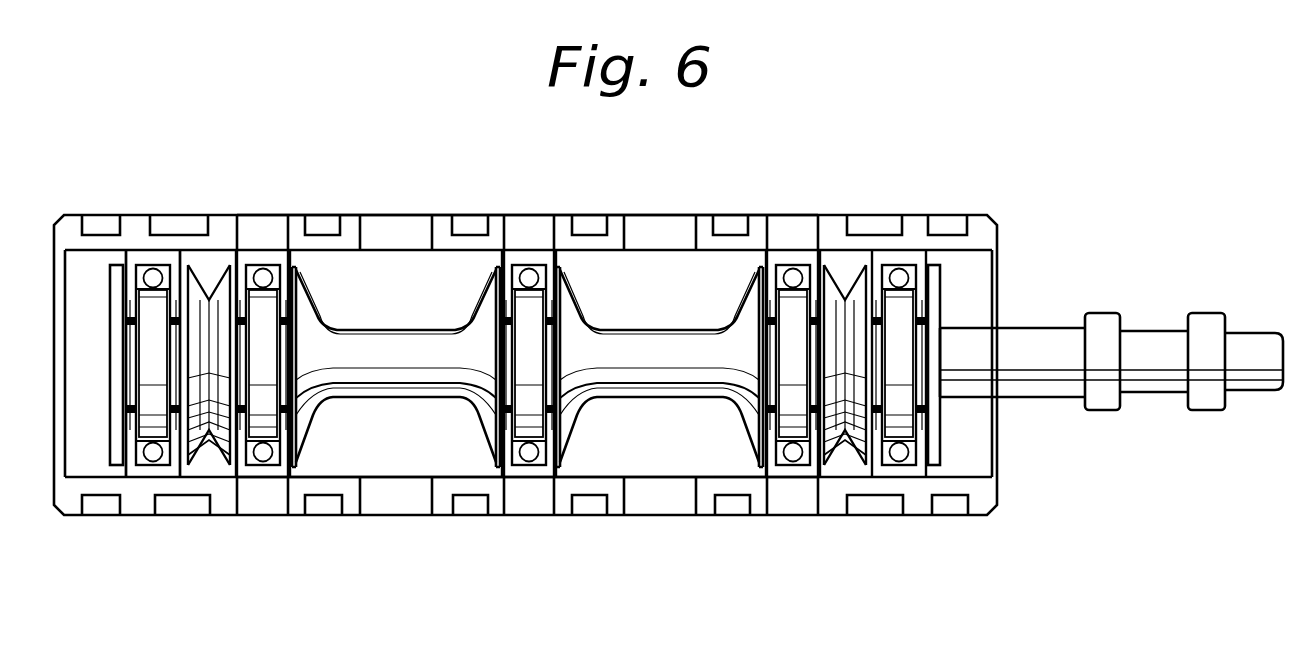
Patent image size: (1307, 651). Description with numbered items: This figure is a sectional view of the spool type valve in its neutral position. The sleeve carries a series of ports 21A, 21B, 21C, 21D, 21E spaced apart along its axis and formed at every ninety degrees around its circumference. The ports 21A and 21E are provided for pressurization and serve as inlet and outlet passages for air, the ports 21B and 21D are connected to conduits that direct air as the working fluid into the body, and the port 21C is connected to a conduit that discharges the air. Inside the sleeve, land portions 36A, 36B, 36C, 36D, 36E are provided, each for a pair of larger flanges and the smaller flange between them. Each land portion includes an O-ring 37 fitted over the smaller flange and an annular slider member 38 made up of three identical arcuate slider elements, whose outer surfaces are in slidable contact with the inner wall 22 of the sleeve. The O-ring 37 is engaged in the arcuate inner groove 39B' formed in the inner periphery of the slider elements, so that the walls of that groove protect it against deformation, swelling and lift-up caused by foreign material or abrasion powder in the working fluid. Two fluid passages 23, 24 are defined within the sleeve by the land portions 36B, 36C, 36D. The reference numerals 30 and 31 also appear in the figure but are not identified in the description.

The drive unit housing assembly 30 is at (1017, 290).
The collar 31 is at (1100, 411).
The annular slider member 38 is at (133, 258).
The land portion 36A is at (158, 480).
The land portion 36B is at (268, 252).
The land portion 36C is at (518, 481).
The land portion 36D is at (797, 250).
The land portion 36E is at (903, 462).
The O-ring 37 is at (262, 462).
The arcuate inner groove 39B' is at (673, 423).
The port 21A is at (247, 225).
The port 21B is at (387, 222).
The port 21C is at (527, 220).
The port 21D is at (650, 220).
The port 21E is at (775, 222).
The inner wall of the sleeve 22 is at (443, 467).
The fluid passage 23 is at (377, 463).
The fluid passage 24 is at (657, 462).